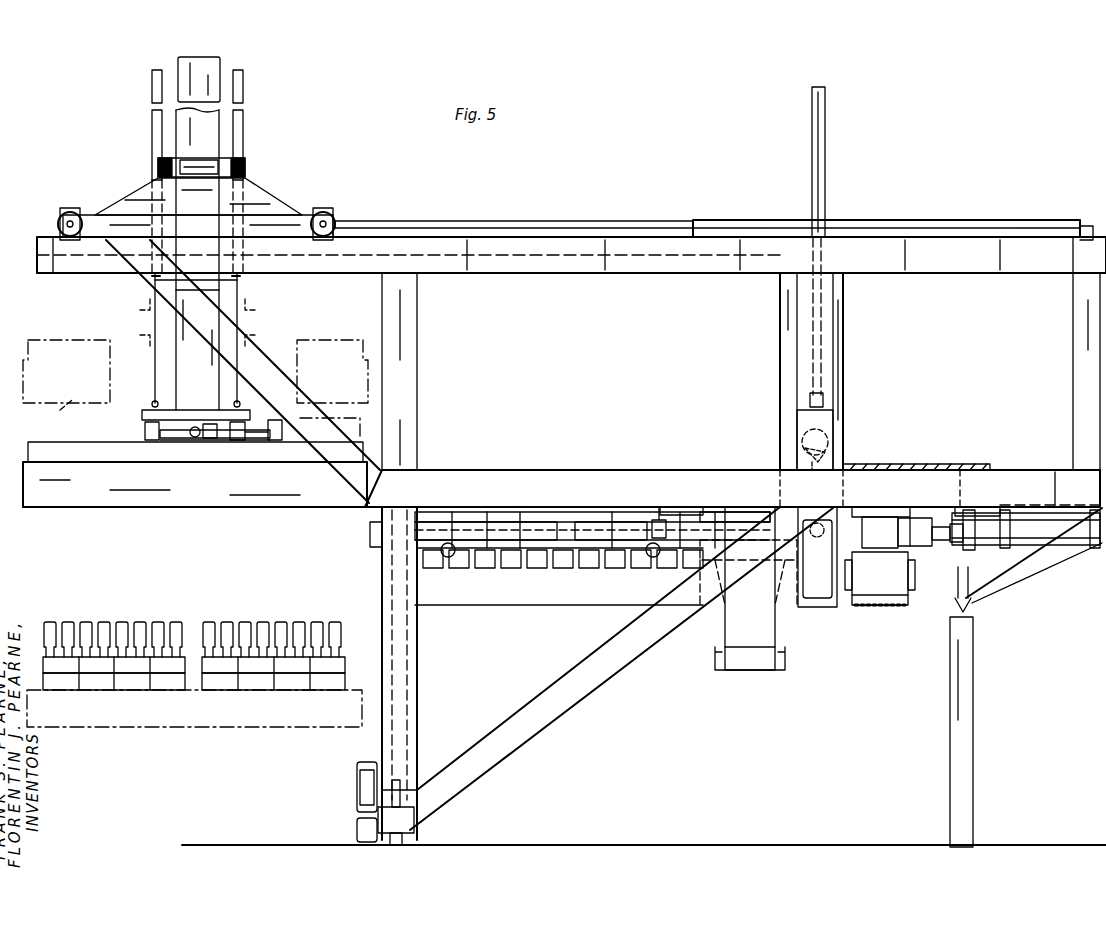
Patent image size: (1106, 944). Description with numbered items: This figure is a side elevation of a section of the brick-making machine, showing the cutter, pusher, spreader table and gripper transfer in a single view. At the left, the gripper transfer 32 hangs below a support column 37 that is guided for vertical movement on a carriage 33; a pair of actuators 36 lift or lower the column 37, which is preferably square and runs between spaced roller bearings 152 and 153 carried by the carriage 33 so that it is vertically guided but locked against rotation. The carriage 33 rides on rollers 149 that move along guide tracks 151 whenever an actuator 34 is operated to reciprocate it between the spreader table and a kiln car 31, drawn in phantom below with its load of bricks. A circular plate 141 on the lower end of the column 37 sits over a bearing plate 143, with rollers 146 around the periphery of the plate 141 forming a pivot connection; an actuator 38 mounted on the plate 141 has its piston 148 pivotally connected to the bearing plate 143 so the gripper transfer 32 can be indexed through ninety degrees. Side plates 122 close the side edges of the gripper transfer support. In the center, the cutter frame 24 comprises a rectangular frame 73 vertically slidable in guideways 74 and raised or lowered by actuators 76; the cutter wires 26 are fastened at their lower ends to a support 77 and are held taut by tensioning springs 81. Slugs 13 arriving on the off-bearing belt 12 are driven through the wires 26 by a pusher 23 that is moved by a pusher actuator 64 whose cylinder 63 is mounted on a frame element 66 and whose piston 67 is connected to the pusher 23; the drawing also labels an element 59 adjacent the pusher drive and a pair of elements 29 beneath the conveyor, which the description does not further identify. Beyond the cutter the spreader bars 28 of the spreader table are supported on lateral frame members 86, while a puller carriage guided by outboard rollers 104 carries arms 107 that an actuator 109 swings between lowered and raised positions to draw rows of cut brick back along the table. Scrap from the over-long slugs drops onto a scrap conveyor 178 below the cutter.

The off-bearing belt 12 is at (862, 516).
The slugs 13 is at (880, 517).
The pusher 23 is at (920, 552).
The cutter frame 24 is at (825, 398).
The cutter wires 26 is at (835, 452).
The spreader bars 28 is at (500, 548).
The conveyor roller 29 is at (448, 558).
The kiln car 31 is at (197, 728).
The gripper transfer 32 is at (58, 440).
The carriage 33 is at (270, 222).
The actuator 34 is at (1006, 218).
The actuators 36 is at (152, 119).
The support column 37 is at (210, 83).
The actuator 38 is at (293, 442).
The clutch 59 is at (918, 520).
The cylinder 63 is at (1077, 550).
The pusher actuator 64 is at (1052, 548).
The frame element 66 is at (993, 513).
The piston 67 is at (955, 516).
The rectangular frame 73 is at (833, 420).
The guideways 74 is at (843, 320).
The actuators 76 is at (826, 142).
The support 77 is at (817, 603).
The tensioning spring 81 is at (800, 436).
The lateral frame members 86 is at (563, 562).
The outboard rollers 104 is at (650, 530).
The arm 107 is at (737, 517).
The actuator 109 is at (680, 507).
The side plates 122 is at (180, 500).
The circular plate 141 is at (150, 412).
The bearing plate 143 is at (228, 440).
The rollers 146 is at (197, 437).
The piston 148 is at (217, 442).
The rollers 149 is at (62, 218).
The guide tracks 151 is at (425, 236).
The roller bearing 152 is at (187, 156).
The roller bearing 153 is at (197, 259).
The scrap conveyor 178 is at (750, 663).